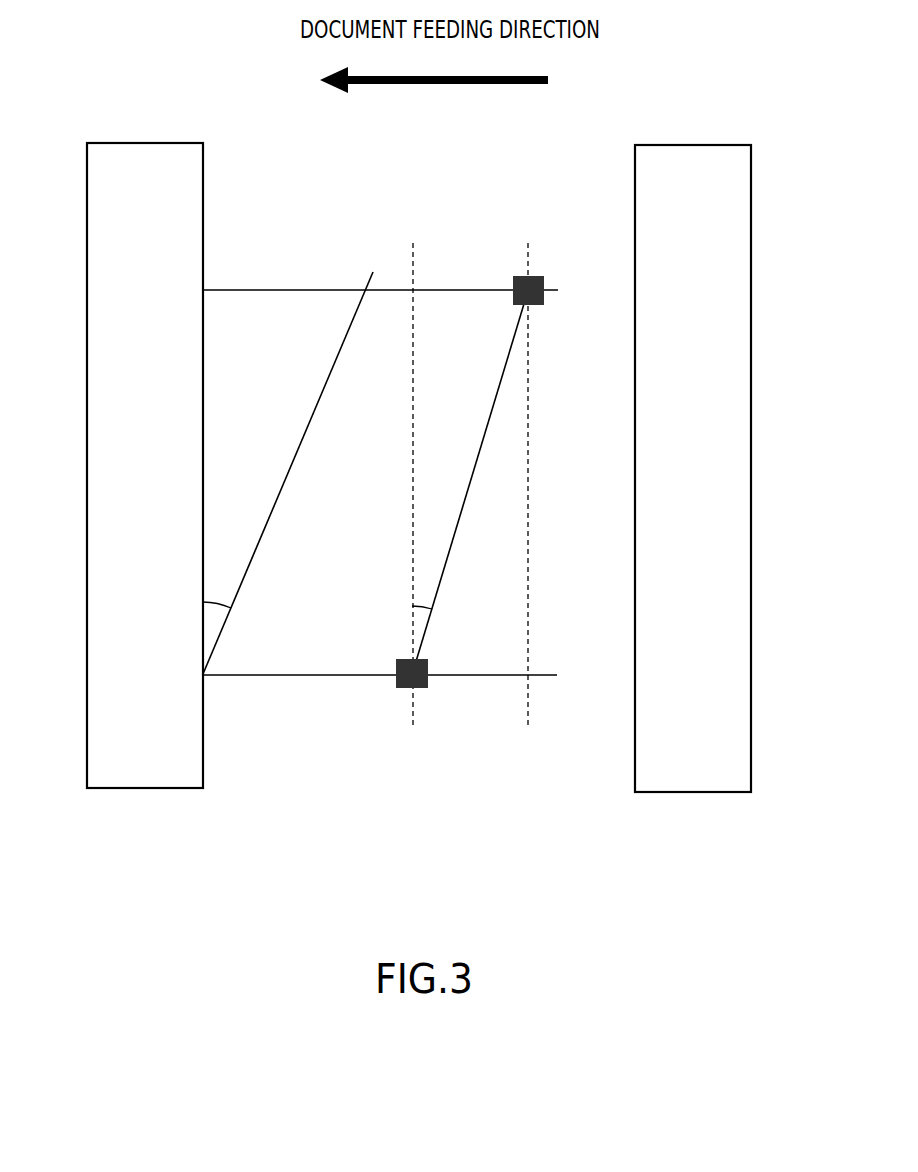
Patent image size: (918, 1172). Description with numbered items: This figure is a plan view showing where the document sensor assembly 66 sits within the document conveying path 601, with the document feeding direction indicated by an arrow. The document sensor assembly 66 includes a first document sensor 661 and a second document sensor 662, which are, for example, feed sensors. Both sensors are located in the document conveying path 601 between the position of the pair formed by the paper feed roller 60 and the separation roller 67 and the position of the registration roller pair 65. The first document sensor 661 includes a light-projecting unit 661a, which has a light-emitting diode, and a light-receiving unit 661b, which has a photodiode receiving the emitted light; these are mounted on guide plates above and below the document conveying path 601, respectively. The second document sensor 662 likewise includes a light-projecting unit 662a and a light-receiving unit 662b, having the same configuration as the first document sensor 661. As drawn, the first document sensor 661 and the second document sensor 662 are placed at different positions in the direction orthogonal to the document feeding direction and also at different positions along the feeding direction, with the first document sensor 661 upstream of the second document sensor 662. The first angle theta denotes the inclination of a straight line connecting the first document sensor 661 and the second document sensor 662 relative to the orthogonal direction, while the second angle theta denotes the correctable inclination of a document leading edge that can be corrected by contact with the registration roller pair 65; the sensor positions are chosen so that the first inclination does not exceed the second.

The registration roller pair 65 is at (129, 773).
The paper feed roller 60 is at (699, 505).
The separation roller 67 is at (678, 774).
The document sensor assembly 66 is at (482, 484).
The first document sensor 661 is at (579, 212).
The light-projecting unit 661a is at (579, 212).
The light-receiving unit 661b is at (545, 277).
The second document sensor 662 is at (382, 754).
The light-projecting unit 662a is at (382, 754).
The light-receiving unit 662b is at (402, 688).
The document conveying path 601 is at (489, 759).